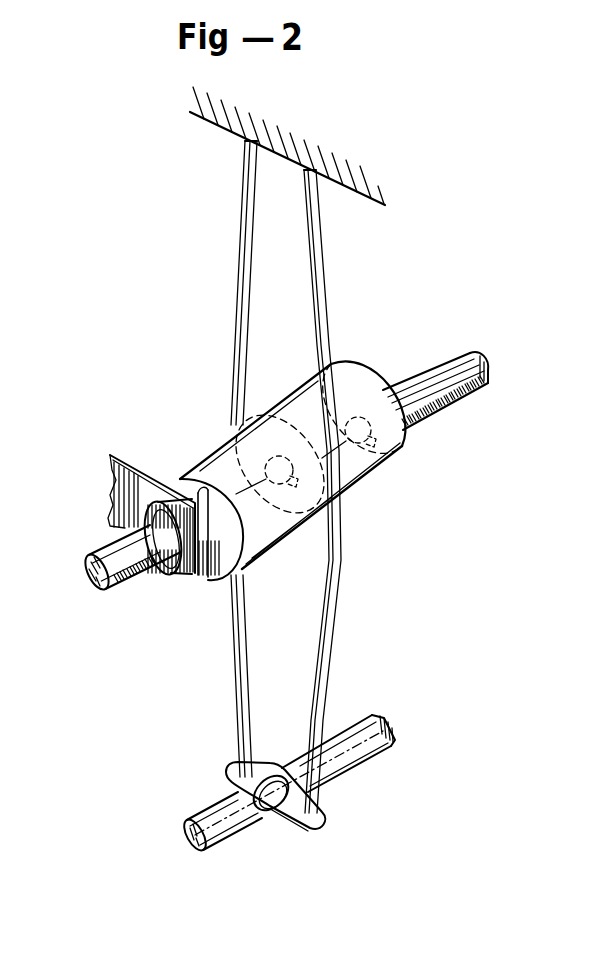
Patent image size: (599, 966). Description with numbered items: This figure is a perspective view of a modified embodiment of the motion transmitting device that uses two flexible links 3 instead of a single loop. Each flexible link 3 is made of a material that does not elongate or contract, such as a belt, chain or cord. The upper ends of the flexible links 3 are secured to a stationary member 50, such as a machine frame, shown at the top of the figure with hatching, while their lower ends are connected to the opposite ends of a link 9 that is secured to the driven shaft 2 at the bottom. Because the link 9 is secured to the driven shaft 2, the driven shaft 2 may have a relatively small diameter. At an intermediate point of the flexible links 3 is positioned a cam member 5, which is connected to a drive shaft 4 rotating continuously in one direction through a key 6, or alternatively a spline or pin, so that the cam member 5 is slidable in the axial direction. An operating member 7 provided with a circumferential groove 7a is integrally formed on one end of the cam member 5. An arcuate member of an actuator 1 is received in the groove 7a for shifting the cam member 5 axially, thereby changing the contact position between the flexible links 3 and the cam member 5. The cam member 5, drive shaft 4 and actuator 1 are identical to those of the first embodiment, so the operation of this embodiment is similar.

The actuator 1 is at (132, 470).
The driven shaft 2 is at (375, 762).
The flexible motion transmitting link 3 is at (337, 604).
The drive shaft 4 is at (423, 372).
The cam member 5 is at (397, 448).
The key 6 is at (457, 398).
The operating member 7 is at (181, 572).
The circumferential groove 7a is at (240, 572).
The link 9 is at (292, 812).
The stationary member 50 is at (337, 180).